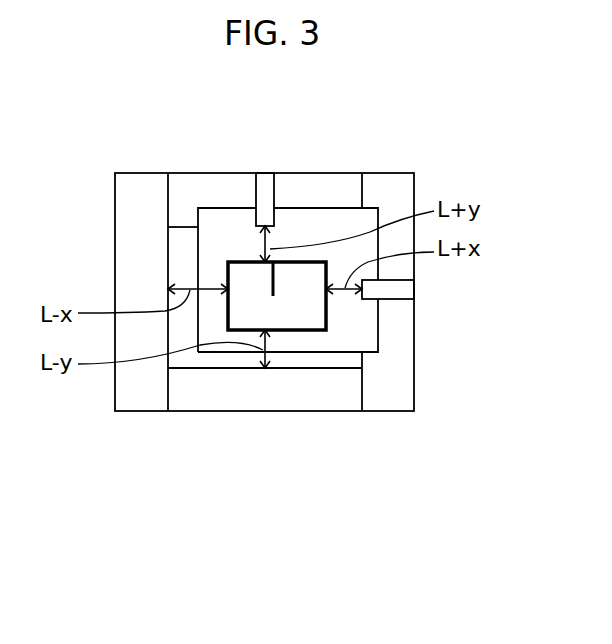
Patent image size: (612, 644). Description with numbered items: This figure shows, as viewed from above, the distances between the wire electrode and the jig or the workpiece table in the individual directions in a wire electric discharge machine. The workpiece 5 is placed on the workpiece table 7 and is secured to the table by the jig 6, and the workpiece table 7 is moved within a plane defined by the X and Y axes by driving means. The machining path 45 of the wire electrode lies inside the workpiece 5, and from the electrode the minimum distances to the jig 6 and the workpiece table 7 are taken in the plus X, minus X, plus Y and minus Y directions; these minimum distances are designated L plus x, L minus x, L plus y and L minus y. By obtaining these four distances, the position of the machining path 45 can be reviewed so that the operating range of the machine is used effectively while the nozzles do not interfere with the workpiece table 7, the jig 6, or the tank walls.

The workpiece 5 is at (367, 338).
The jig 6 is at (265, 178).
The workpiece table 7 is at (393, 386).
The machining path 45 is at (228, 265).